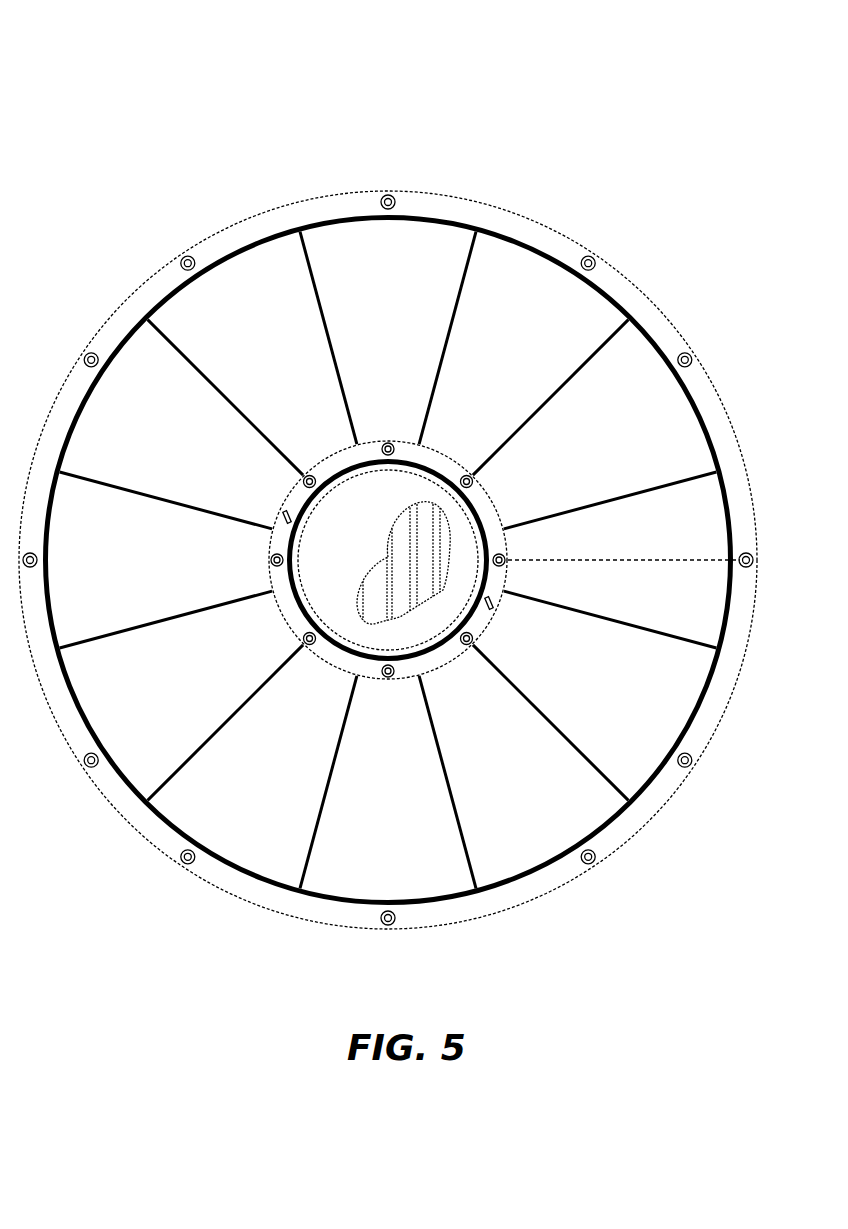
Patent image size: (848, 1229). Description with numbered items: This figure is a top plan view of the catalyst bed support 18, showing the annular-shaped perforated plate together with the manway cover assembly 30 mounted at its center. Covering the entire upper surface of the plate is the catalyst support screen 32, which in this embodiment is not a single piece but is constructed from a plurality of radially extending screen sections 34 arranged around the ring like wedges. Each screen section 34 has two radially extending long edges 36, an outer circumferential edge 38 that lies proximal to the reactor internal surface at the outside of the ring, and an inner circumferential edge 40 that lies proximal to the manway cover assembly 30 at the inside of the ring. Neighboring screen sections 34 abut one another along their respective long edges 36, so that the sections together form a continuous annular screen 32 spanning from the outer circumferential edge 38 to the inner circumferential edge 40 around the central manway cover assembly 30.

The catalyst bed support 18 is at (388, 492).
The manway cover assembly 30 is at (402, 566).
The catalyst support screen 32 is at (248, 278).
The screen sections 34 is at (423, 235).
The long edges 36 is at (448, 355).
The outer circumferential edge 38 is at (508, 232).
The inner circumferential edge 40 is at (283, 620).